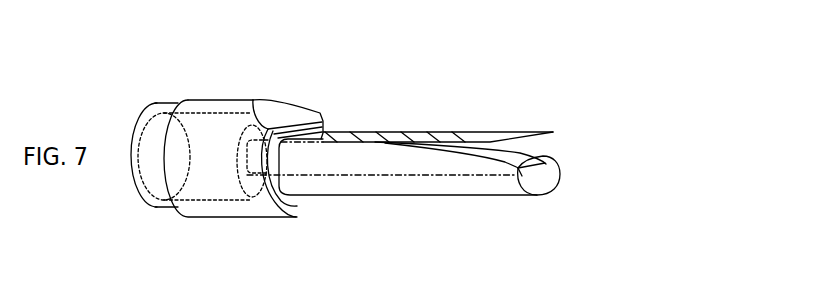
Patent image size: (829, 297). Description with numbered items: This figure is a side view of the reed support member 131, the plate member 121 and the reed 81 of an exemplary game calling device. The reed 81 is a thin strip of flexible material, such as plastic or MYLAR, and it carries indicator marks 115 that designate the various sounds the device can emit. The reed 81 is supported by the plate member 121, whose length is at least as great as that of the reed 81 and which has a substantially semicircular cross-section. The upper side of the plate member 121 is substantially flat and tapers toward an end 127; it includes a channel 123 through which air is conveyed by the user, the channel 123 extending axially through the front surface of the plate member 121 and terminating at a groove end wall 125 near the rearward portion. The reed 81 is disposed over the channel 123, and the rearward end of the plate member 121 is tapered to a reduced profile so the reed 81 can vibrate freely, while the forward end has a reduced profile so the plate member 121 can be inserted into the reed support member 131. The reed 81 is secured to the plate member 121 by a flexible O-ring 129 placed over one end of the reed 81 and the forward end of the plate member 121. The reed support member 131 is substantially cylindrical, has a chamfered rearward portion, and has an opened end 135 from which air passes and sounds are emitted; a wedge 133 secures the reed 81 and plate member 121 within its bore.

The reed 81 is at (537, 132).
The indicator marks 115 is at (392, 140).
The plate member 121 is at (453, 190).
The channel 123 is at (503, 147).
The groove end wall 125 is at (540, 153).
The end 127 is at (557, 152).
The flexible O-ring 129 is at (298, 197).
The reed support member 131 is at (228, 98).
The wedge 133 is at (278, 118).
The opened end 135 is at (130, 144).